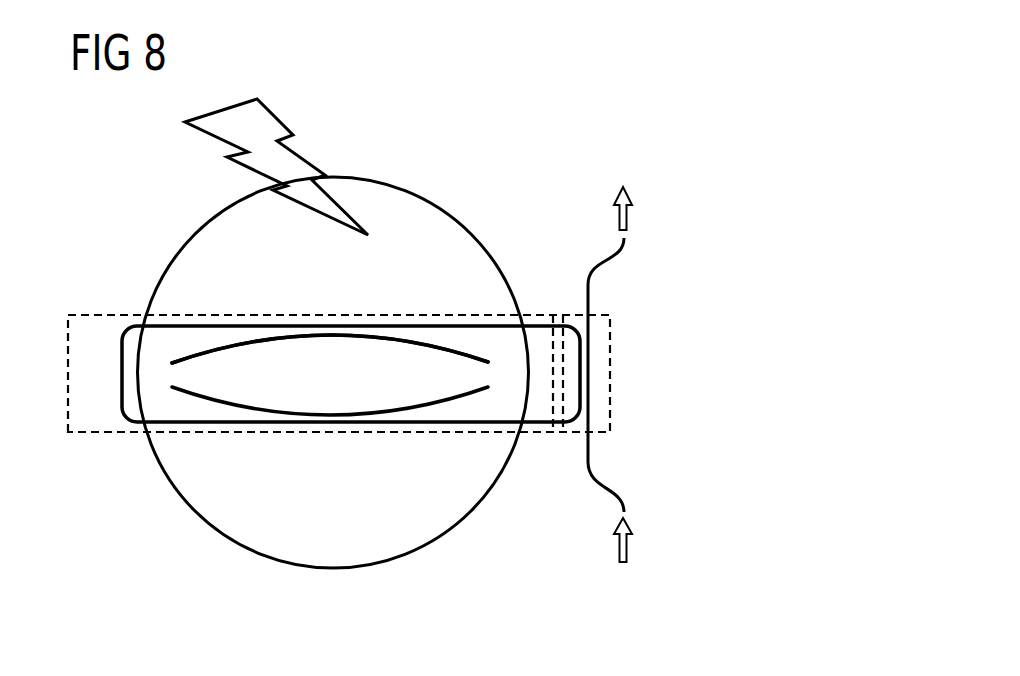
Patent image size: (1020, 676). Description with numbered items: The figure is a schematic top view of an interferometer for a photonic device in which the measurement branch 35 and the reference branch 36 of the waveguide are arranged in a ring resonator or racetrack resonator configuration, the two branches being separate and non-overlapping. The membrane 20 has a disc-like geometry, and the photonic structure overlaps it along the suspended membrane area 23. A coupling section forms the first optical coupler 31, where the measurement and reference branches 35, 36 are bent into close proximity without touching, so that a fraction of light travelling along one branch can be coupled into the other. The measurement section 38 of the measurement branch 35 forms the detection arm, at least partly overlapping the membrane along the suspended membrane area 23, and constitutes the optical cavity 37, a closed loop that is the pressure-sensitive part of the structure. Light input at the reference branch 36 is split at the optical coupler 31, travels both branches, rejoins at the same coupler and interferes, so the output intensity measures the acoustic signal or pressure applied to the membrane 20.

The membrane 20 is at (398, 555).
The suspended membrane area 23 is at (167, 370).
The first optical coupler 31 is at (610, 375).
The measurement branch 35 is at (217, 422).
The reference branch 36 is at (588, 465).
The optical cavity 37 is at (337, 378).
The measurement section 38 is at (335, 315).